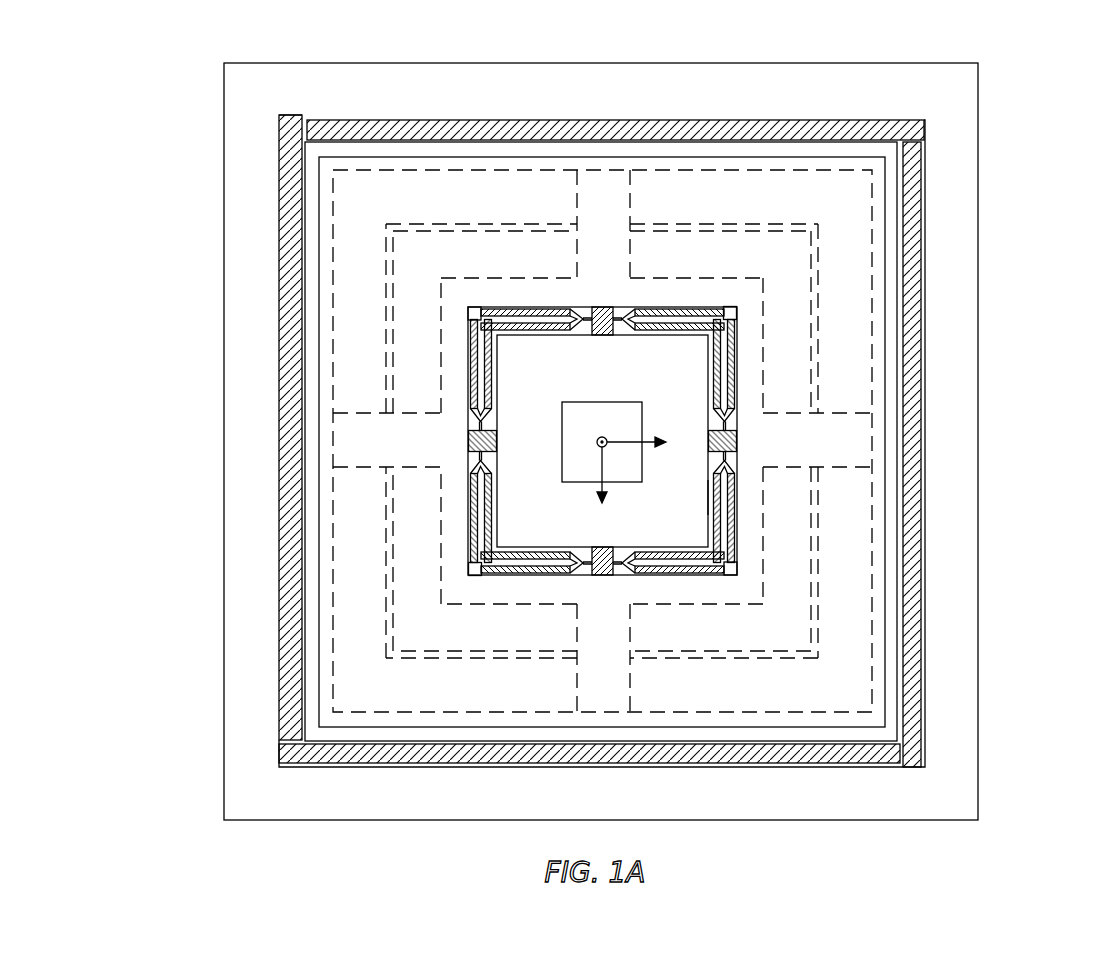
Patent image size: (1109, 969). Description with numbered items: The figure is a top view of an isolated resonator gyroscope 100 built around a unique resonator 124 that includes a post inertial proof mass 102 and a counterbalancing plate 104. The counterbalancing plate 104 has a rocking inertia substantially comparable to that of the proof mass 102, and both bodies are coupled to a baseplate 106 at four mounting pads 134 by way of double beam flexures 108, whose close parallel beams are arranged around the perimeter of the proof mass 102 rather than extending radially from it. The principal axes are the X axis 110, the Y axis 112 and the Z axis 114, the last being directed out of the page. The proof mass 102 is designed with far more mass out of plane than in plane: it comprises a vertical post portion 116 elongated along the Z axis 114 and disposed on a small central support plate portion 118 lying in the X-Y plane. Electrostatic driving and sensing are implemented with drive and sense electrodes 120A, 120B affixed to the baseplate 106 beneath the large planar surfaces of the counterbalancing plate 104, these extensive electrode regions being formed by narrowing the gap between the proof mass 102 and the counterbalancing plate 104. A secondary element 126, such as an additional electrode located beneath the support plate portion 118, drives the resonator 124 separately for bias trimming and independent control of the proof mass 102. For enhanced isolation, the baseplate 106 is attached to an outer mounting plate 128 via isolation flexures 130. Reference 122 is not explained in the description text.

The isolated resonator gyroscope 100 is at (1047, 73).
The post inertial proof mass 102 is at (470, 318).
The counterbalancing plate 104 is at (896, 325).
The baseplate 106 is at (898, 385).
The double beam flexures 108 is at (476, 389).
The X axis 110 is at (573, 497).
The Y axis 112 is at (653, 473).
The Z axis 114 is at (578, 425).
The vertical post portion 116 is at (632, 402).
The central support plate portion 118 is at (707, 497).
The drive and sense electrode 120A is at (403, 415).
The drive and sense electrode 120B is at (333, 300).
The corner anchors 122 is at (470, 317).
The resonator 124 is at (306, 140).
The secondary element 126 is at (710, 465).
The outer mounting plate 128 is at (978, 436).
The isolation flexures 130 is at (740, 118).
The mounting pads 134 is at (463, 430).